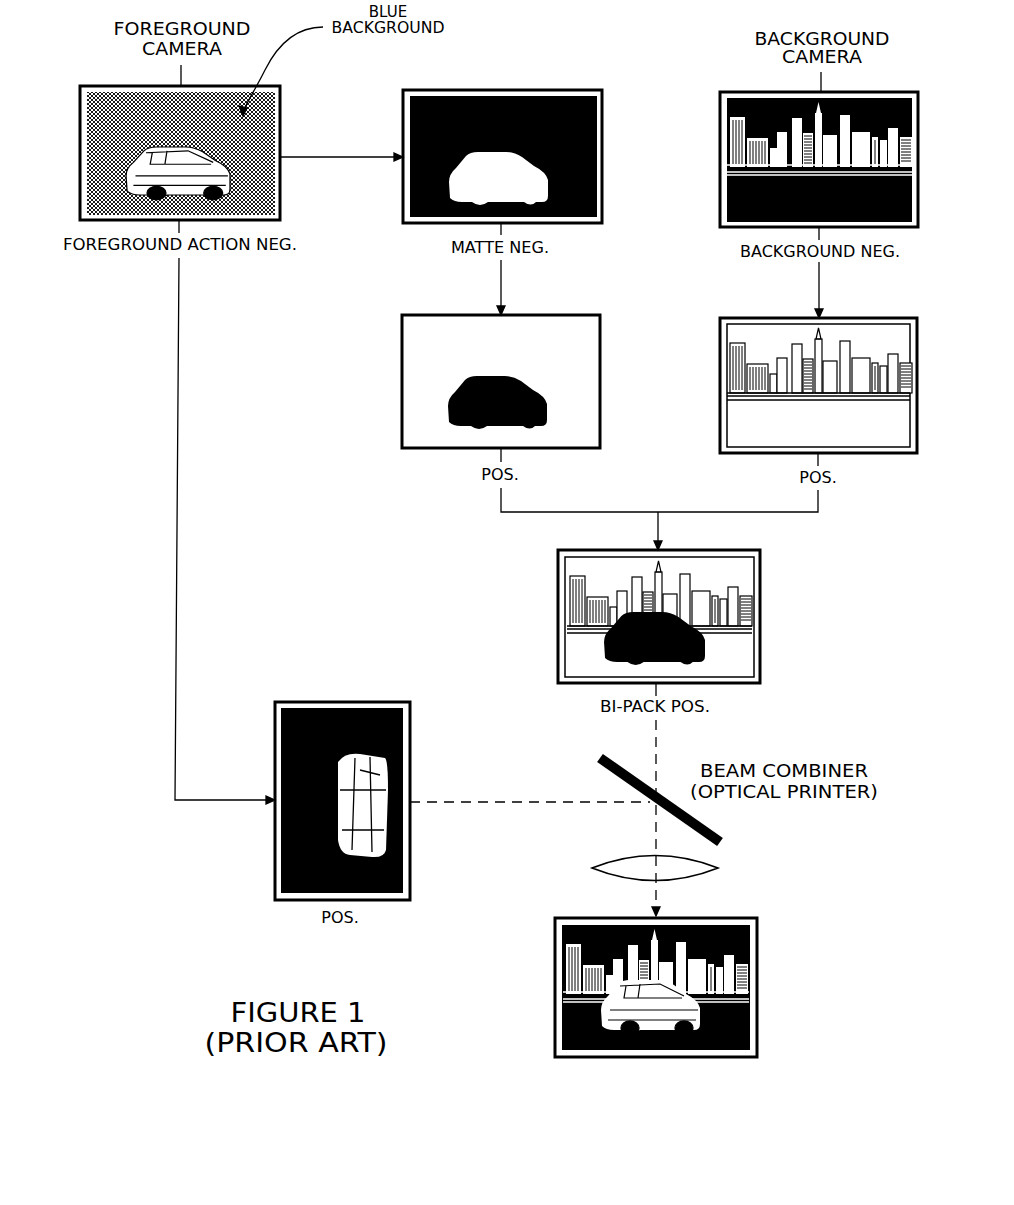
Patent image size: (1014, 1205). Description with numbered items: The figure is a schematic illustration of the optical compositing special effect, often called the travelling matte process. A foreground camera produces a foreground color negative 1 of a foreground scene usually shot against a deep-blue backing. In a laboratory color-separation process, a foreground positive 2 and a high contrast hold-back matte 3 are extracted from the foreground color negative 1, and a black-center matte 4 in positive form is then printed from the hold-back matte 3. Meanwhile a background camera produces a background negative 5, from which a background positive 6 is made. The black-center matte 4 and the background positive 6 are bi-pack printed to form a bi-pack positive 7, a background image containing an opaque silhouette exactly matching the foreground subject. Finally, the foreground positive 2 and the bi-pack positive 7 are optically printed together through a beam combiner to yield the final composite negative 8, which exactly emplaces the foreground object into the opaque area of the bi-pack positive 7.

The foreground color negative 1 is at (80, 128).
The foreground positive 2 is at (410, 722).
The high contrast hold-back matte 3 is at (403, 128).
The black-center matte 4 is at (402, 358).
The background negative 5 is at (720, 137).
The background positive 6 is at (720, 362).
The bi-pack positive 7 is at (558, 583).
The final composite negative 8 is at (555, 965).